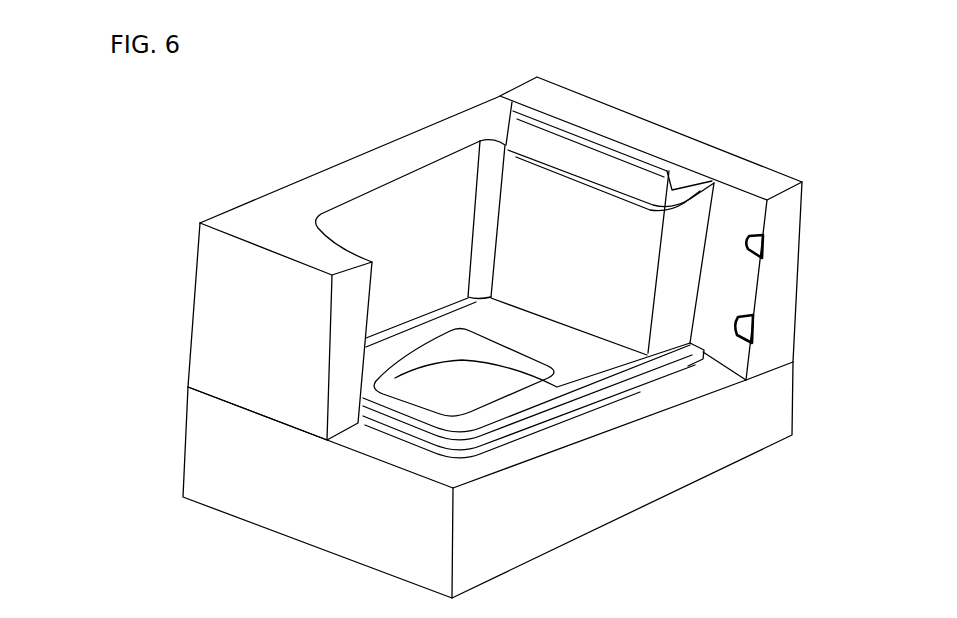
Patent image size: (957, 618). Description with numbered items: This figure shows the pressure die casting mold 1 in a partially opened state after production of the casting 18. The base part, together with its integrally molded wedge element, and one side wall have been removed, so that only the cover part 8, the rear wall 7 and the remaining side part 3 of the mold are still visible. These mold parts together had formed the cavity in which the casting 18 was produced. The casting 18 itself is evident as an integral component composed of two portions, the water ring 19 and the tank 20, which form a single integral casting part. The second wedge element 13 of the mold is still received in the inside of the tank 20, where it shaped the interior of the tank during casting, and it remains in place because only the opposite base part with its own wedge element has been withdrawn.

The pressure die casting mold 1 is at (706, 87).
The side part 3 is at (341, 178).
The rear wall 7 is at (761, 176).
The cover part 8 is at (643, 468).
The second wedge element 13 is at (597, 161).
The casting 18 is at (589, 363).
The water ring 19 is at (487, 405).
The tank 20 is at (672, 311).